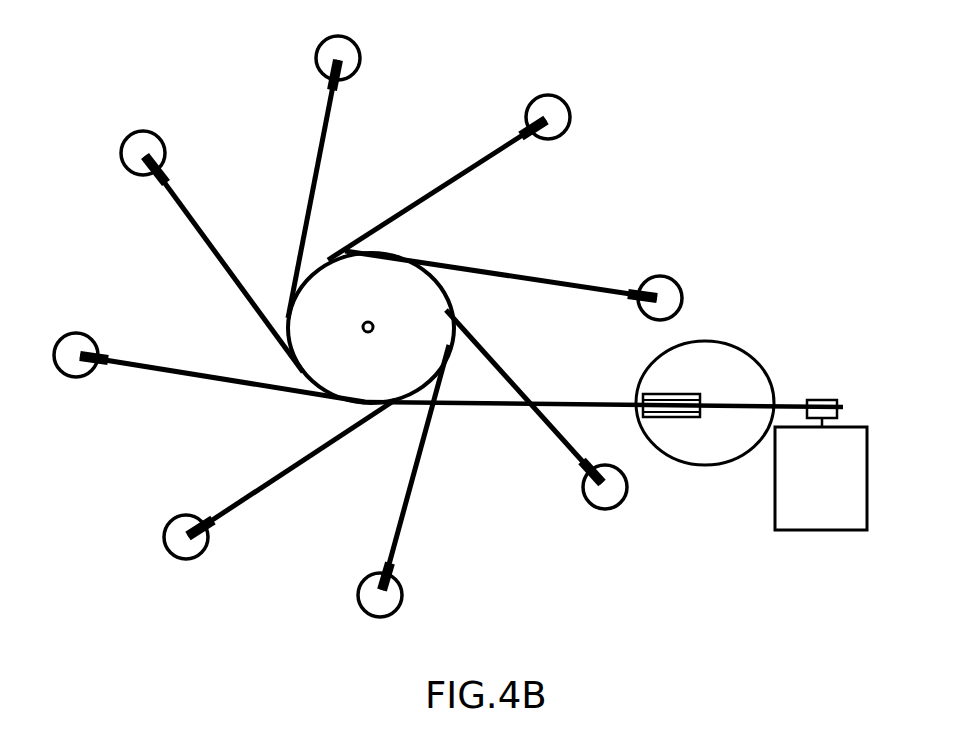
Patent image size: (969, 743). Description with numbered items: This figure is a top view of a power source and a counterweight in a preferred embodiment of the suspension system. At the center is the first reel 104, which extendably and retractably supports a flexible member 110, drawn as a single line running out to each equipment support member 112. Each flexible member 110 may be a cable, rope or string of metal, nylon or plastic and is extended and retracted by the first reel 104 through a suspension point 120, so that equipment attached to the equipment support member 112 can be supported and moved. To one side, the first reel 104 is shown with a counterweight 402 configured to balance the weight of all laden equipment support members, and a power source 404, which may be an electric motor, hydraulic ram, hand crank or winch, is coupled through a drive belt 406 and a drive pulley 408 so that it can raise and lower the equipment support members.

The first reel 104 is at (301, 373).
The flexible member 110 is at (322, 156).
The equipment support member 112 is at (573, 112).
The suspension point 120 is at (130, 168).
The counterweight 402 is at (728, 343).
The power source 404 is at (775, 505).
The drive belt 406 is at (643, 398).
The drive pulley 408 is at (783, 405).